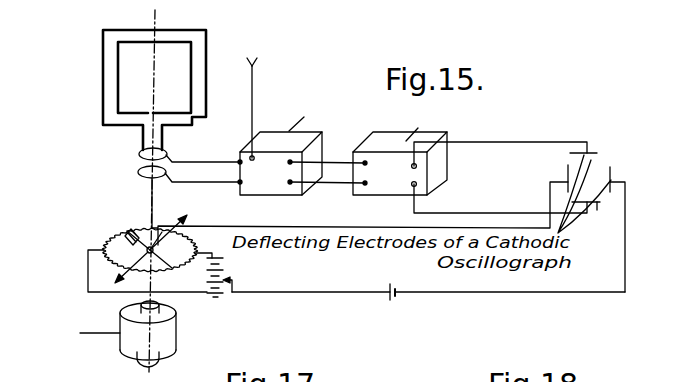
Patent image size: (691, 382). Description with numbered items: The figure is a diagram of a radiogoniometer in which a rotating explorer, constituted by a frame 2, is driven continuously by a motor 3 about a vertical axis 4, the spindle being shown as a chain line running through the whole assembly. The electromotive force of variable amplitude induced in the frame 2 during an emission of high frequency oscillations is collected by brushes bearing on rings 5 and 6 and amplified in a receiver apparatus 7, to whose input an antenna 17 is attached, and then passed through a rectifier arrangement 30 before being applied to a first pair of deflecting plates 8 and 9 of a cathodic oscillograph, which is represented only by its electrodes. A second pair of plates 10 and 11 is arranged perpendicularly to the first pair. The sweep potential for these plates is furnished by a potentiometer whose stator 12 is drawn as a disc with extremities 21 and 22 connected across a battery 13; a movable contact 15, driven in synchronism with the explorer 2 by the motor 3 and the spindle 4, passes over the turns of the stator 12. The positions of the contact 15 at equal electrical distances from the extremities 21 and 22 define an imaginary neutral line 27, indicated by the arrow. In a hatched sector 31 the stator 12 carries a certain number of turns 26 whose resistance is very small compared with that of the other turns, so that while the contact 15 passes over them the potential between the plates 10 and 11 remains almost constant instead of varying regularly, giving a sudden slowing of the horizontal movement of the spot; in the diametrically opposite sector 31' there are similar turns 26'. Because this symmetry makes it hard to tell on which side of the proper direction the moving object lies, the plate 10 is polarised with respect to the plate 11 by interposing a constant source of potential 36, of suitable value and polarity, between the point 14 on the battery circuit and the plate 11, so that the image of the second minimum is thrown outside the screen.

The frame 2 is at (200, 45).
The motor 3 is at (168, 337).
The vertical axis 4 is at (154, 191).
The ring 5 is at (139, 156).
The ring 6 is at (138, 173).
The receiver apparatus 7 is at (264, 190).
The plate 8 is at (597, 153).
The plate 9 is at (590, 217).
The deflecting plate 10 is at (566, 167).
The plate 11 is at (612, 170).
The potentiometer stator 12 is at (170, 248).
The battery 13 is at (226, 268).
The point 14 is at (233, 286).
The movable contact 15 is at (149, 246).
The antenna 17 is at (254, 94).
The extremity 21 is at (145, 261).
The extremity 22 is at (208, 245).
The turns 26 is at (130, 226).
The turns 26' is at (174, 272).
The neutral line 27 is at (152, 238).
The rectifier arrangement 30 is at (386, 188).
The sector 31 is at (123, 256).
The sector 31' is at (181, 252).
The constant source of potential 36 is at (428, 307).